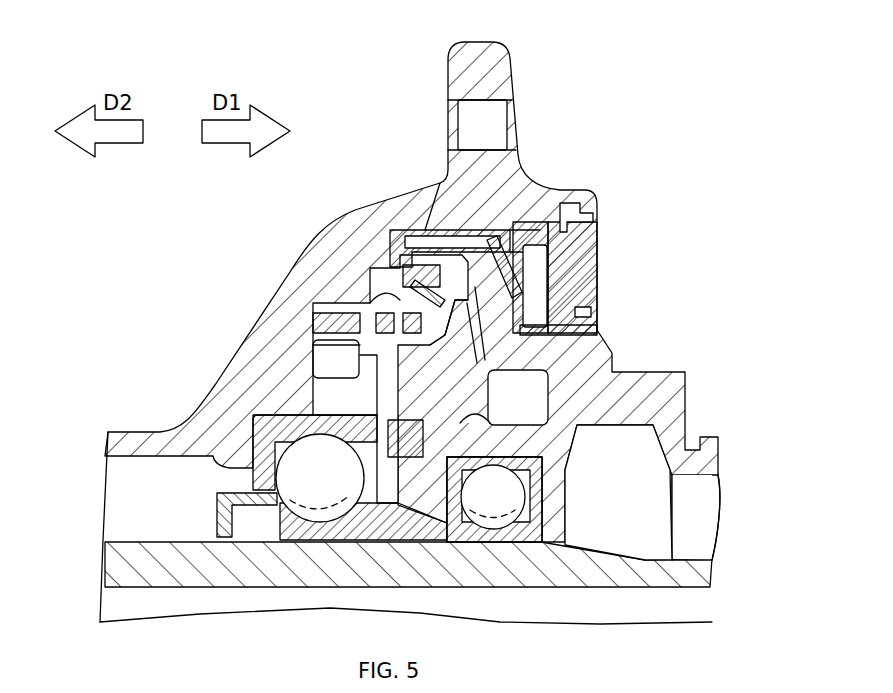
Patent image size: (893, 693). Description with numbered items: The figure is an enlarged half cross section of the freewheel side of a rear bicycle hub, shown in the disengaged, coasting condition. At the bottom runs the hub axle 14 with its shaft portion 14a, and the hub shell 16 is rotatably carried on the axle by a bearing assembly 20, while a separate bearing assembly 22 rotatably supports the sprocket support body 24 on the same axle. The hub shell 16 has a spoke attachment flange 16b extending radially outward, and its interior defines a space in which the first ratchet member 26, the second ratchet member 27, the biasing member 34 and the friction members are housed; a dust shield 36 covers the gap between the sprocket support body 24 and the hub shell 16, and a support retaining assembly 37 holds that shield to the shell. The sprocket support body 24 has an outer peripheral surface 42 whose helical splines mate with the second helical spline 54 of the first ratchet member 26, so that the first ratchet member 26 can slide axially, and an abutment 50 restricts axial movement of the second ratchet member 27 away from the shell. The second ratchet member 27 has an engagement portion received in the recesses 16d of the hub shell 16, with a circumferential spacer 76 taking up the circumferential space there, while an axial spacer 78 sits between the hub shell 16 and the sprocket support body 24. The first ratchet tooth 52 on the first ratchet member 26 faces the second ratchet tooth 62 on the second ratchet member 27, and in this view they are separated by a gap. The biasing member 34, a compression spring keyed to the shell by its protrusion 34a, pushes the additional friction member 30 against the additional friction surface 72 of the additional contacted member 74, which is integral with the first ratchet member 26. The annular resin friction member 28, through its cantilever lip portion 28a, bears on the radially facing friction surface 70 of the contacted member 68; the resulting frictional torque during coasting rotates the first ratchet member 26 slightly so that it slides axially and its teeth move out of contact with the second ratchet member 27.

The hub axle 14 is at (691, 554).
The shaft portion 14a is at (128, 565).
The hub shell 16 is at (154, 428).
The spoke attachment flange 16b is at (480, 40).
The recesses 16d is at (425, 232).
The bearing assembly 20 is at (333, 497).
The bearing assembly 22 is at (500, 497).
The sprocket support body 24 is at (714, 432).
The first ratchet member 26 is at (356, 377).
The second ratchet member 27 is at (576, 312).
The friction member 28 is at (372, 262).
The cantilever lip portion 28a is at (447, 295).
The additional friction member 30 is at (400, 351).
The biasing member 34 is at (330, 304).
The protrusion 34a is at (333, 322).
The dust shield 36 is at (594, 255).
The support retaining assembly 37 is at (597, 232).
The outer peripheral surface 42 is at (488, 422).
The abutment 50 is at (648, 372).
The first ratchet tooth 52 is at (530, 328).
The second helical spline 54 is at (437, 417).
The second ratchet tooth 62 is at (547, 284).
The contacted member 68 is at (370, 274).
The friction surface 70 is at (490, 230).
The additional friction surface 72 is at (428, 358).
The additional contacted member 74 is at (490, 372).
The circumferential spacer 76 is at (528, 205).
The axial spacer 78 is at (575, 350).